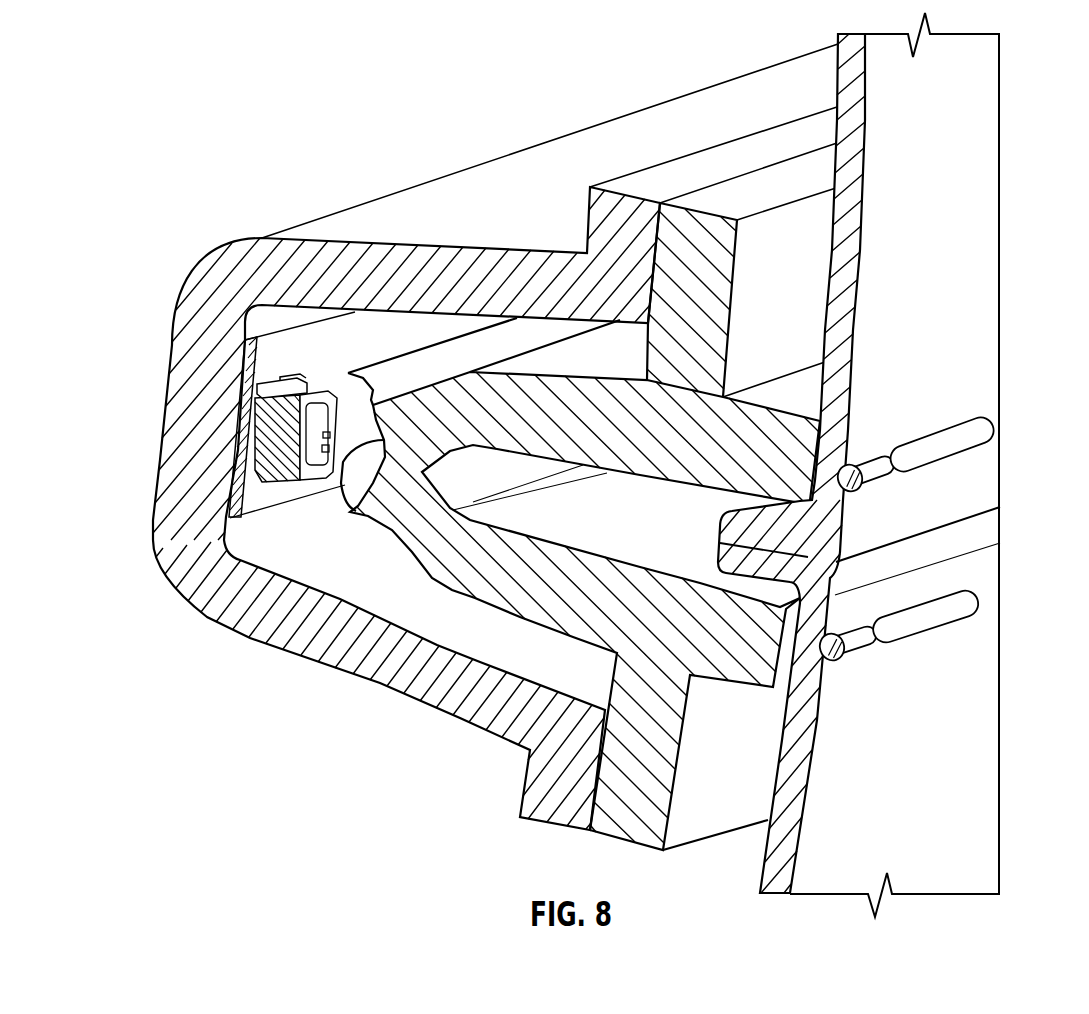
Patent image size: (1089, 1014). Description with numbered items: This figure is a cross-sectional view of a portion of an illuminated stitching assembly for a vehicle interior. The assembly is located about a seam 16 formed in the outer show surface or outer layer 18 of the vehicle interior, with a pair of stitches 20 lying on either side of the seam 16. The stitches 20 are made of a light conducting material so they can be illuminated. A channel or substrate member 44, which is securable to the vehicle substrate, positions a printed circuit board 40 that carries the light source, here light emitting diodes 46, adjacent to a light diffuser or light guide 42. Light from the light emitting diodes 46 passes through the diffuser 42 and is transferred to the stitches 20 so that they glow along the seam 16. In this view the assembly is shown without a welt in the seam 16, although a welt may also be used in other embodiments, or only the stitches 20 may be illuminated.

The seam 16 is at (967, 527).
The outer layer 18 is at (955, 235).
The stitches 20 is at (968, 443).
The printed circuit board 40 is at (288, 350).
The diffuser 42 is at (575, 402).
The substrate member 44 is at (317, 627).
The light emitting diodes 46 is at (258, 467).